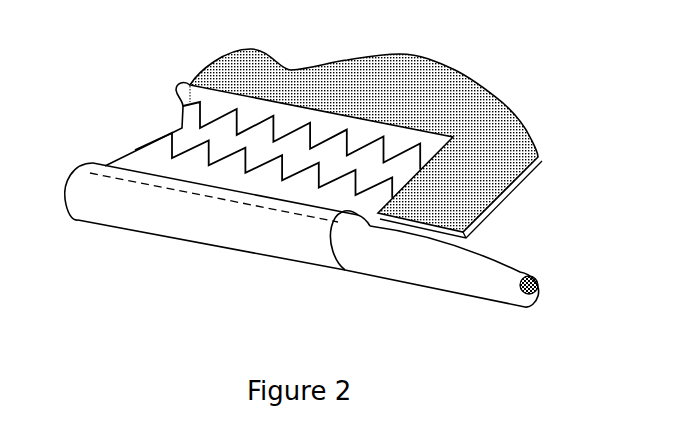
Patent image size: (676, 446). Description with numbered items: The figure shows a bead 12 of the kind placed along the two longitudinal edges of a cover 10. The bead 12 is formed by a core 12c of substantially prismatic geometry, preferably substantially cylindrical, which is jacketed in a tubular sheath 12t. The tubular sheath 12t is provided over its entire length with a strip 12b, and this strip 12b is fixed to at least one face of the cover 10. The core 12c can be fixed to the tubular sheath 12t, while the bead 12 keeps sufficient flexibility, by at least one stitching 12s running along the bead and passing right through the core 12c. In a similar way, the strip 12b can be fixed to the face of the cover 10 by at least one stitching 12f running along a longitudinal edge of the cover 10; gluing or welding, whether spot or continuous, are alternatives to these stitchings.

The cover 10 is at (507, 168).
The bead 12 is at (194, 257).
The stitching 12f is at (188, 85).
The strip 12b is at (131, 160).
The stitching 12s is at (88, 173).
The tubular sheath 12t is at (300, 248).
The core 12c is at (437, 270).